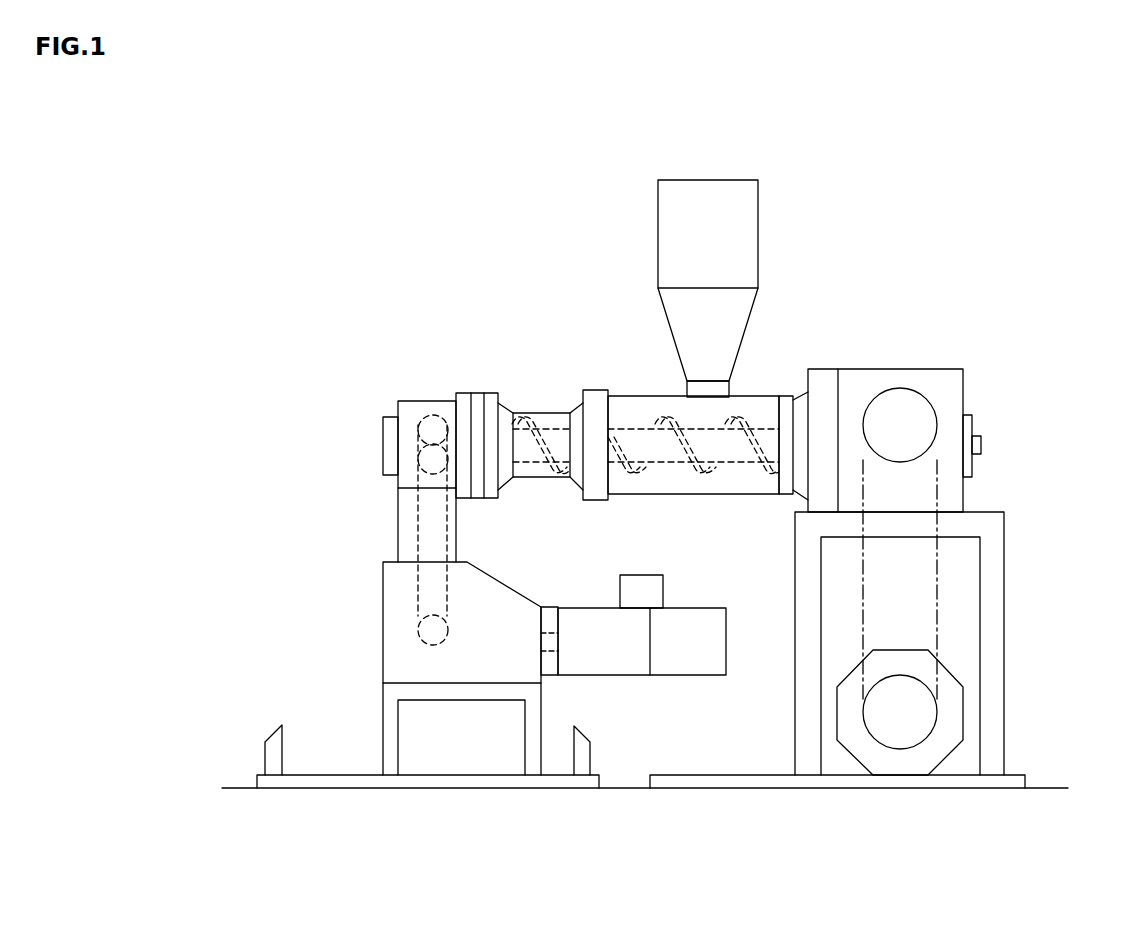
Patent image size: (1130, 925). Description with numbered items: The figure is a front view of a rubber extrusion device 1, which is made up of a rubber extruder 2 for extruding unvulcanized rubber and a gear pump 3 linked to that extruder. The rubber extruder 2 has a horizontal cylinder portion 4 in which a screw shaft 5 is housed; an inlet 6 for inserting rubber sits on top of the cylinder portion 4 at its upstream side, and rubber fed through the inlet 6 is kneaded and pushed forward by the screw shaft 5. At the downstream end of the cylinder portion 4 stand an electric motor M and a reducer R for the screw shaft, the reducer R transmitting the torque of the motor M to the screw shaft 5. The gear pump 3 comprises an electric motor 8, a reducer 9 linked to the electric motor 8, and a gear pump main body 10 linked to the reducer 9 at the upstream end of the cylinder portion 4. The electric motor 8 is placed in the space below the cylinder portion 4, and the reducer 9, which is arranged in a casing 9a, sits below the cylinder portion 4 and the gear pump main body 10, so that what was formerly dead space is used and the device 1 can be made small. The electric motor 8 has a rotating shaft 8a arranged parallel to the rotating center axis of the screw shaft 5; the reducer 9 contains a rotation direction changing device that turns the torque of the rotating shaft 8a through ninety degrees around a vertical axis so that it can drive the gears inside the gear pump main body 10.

The rubber extrusion device 1 is at (542, 126).
The rubber extruder 2 is at (623, 260).
The gear pump 3 is at (475, 357).
The cylinder portion 4 is at (763, 397).
The screw shaft 5 is at (640, 440).
The inlet 6 is at (723, 188).
The electric motor 8 is at (628, 660).
The rotating shaft 8a is at (547, 642).
The reducer 9 is at (409, 645).
The casing 9a is at (382, 585).
The gear pump main body 10 is at (412, 413).
The reducer for the screw shaft R is at (948, 385).
The electric motor M is at (924, 708).